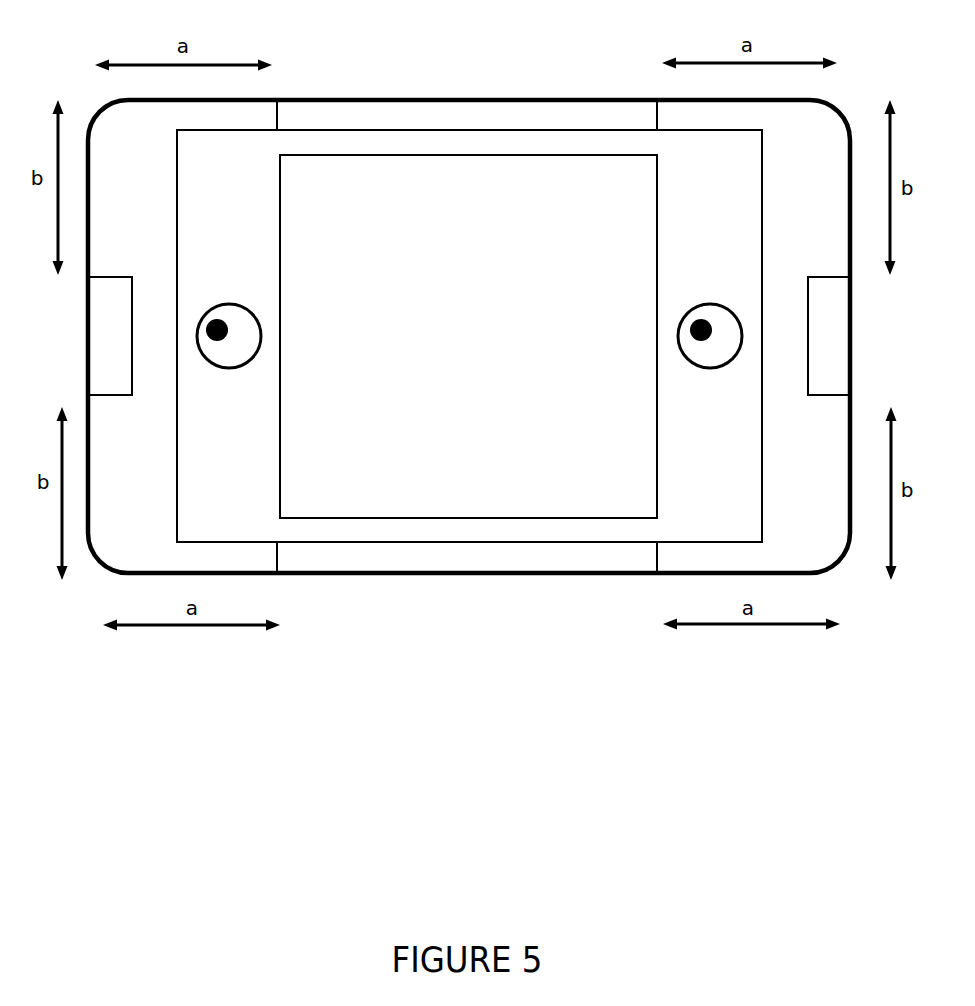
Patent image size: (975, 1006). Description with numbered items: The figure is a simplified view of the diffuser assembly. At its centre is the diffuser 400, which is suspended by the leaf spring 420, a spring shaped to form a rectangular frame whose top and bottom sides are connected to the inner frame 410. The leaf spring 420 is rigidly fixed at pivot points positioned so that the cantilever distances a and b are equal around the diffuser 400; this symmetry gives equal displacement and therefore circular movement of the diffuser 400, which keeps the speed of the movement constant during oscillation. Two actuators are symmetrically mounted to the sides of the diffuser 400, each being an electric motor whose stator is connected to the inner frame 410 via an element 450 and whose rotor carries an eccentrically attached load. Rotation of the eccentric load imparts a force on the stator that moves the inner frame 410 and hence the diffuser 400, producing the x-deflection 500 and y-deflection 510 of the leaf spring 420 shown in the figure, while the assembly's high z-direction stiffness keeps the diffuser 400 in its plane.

The diffuser 400 is at (454, 340).
The inner frame 410 is at (412, 142).
The leaf spring 420 is at (553, 573).
The element 450 is at (226, 352).
The x-deflection 500 is at (136, 340).
The y-deflection 510 is at (480, 555).